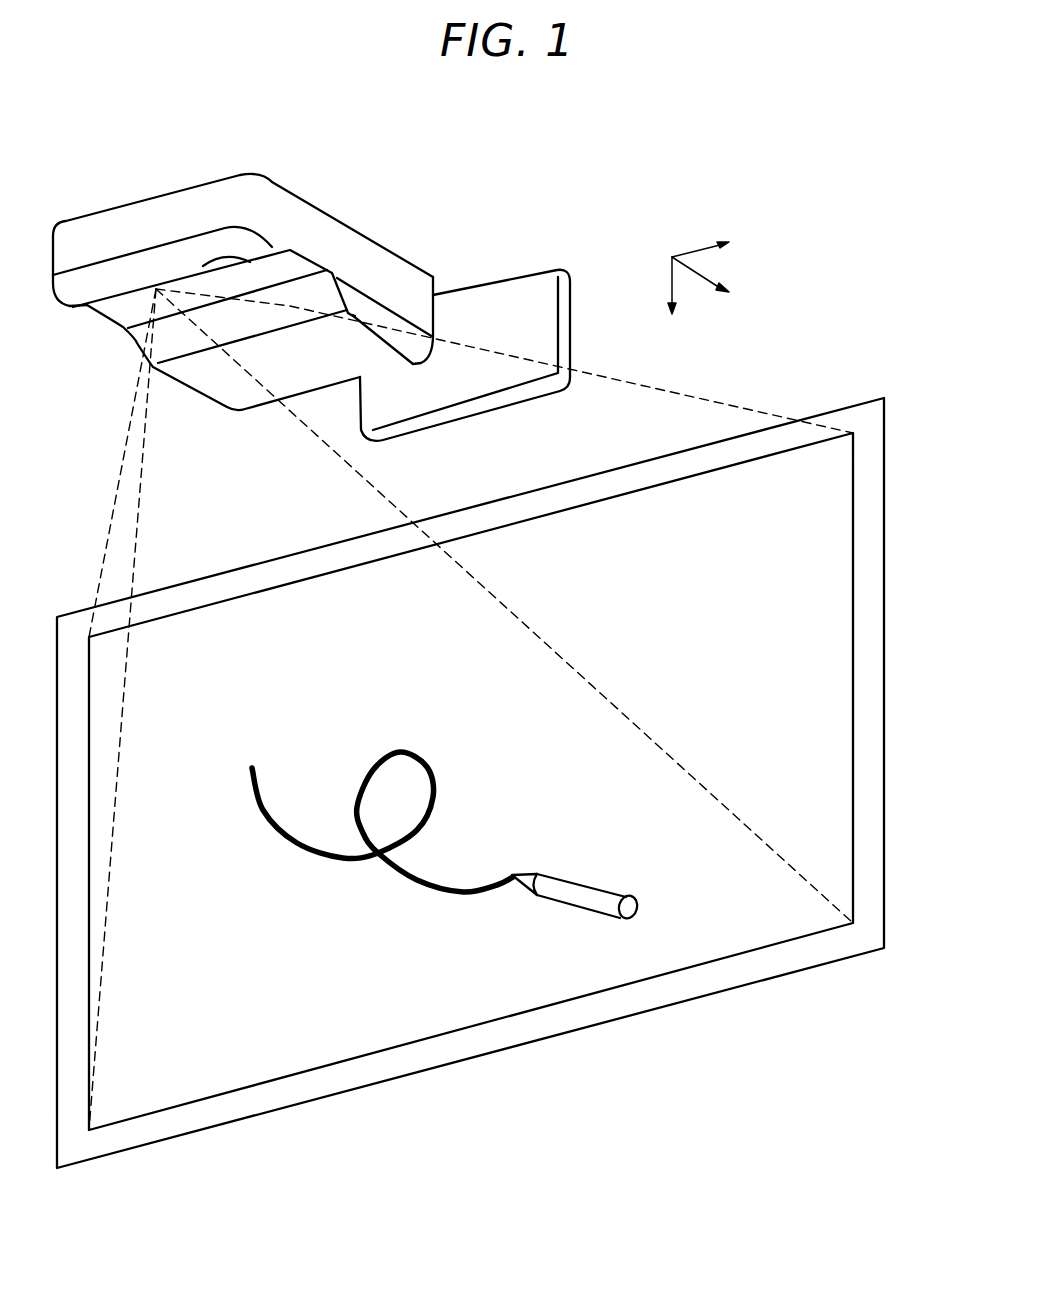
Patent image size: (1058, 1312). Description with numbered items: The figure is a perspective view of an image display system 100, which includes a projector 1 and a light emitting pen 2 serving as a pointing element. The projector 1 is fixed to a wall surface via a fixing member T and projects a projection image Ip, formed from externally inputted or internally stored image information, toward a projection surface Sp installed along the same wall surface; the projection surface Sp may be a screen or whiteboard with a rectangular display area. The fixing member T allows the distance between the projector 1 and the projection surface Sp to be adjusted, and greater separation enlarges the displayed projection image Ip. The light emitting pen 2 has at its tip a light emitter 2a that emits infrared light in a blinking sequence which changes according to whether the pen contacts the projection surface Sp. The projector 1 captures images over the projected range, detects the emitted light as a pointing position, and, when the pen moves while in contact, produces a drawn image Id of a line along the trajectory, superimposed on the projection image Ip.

The image display system 100 is at (755, 119).
The projector 1 is at (149, 212).
The fixing member T is at (473, 322).
The projection surface Sp is at (865, 420).
The projection image Ip is at (837, 550).
The drawn image Id is at (417, 748).
The light emitting pen 2 is at (610, 900).
The light emitter 2a is at (516, 873).